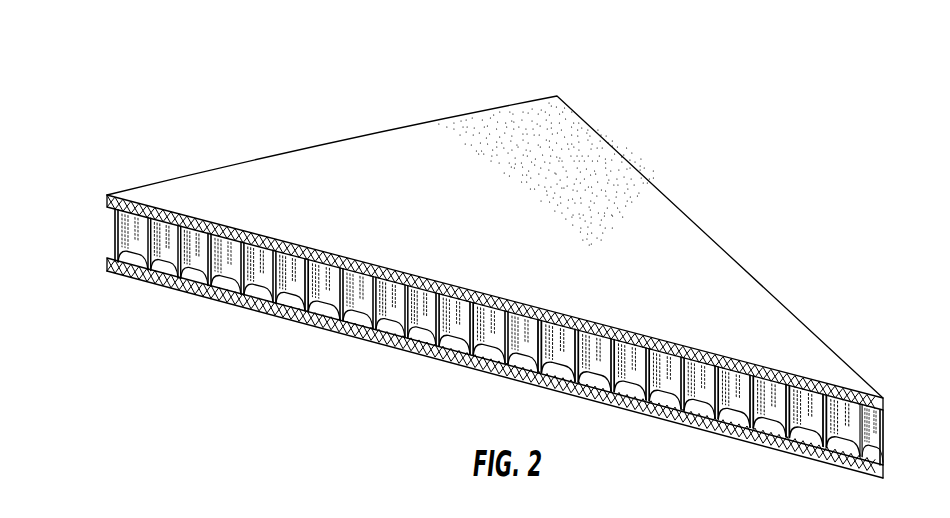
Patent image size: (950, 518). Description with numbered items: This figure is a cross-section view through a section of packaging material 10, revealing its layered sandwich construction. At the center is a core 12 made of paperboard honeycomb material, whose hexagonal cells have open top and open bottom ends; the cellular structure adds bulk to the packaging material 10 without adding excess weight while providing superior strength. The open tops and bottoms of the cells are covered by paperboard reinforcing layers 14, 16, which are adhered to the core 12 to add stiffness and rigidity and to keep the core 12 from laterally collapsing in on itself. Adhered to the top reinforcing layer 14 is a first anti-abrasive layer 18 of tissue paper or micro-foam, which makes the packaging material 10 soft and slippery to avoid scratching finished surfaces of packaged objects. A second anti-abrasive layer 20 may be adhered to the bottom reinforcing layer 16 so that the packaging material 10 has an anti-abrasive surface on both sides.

The packaging material 10 is at (237, 87).
The core 12 is at (117, 231).
The top reinforcing layer 14 is at (107, 207).
The bottom reinforcing layer 16 is at (110, 256).
The first anti-abrasive layer 18 is at (173, 205).
The second anti-abrasive layer 20 is at (177, 287).